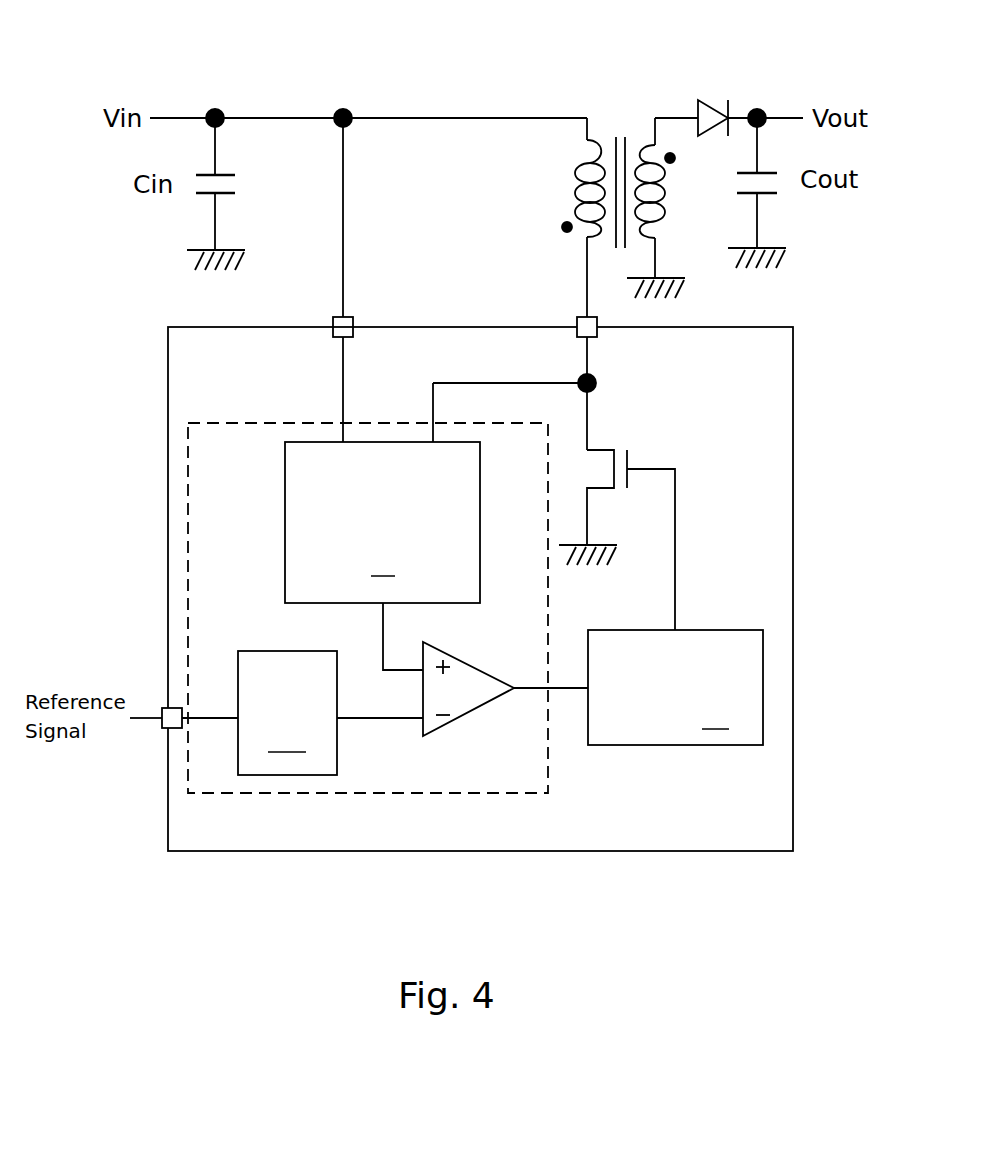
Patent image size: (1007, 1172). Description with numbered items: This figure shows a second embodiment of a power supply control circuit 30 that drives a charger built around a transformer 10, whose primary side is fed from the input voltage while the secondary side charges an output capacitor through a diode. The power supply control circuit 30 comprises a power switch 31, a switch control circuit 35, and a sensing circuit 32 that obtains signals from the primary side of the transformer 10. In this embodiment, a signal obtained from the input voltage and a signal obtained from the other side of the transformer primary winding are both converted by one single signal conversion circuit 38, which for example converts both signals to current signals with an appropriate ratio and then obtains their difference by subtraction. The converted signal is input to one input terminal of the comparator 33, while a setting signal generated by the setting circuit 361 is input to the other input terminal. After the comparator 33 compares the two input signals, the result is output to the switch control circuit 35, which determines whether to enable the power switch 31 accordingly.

The transformer 10 is at (634, 108).
The power supply control circuit 30 is at (793, 436).
The power switch 31 is at (617, 540).
The sensing circuit 32 is at (383, 793).
The comparator 33 is at (480, 708).
The switch control circuit 35 is at (675, 687).
The signal conversion circuit 38 is at (382, 522).
The setting circuit 361 is at (287, 713).